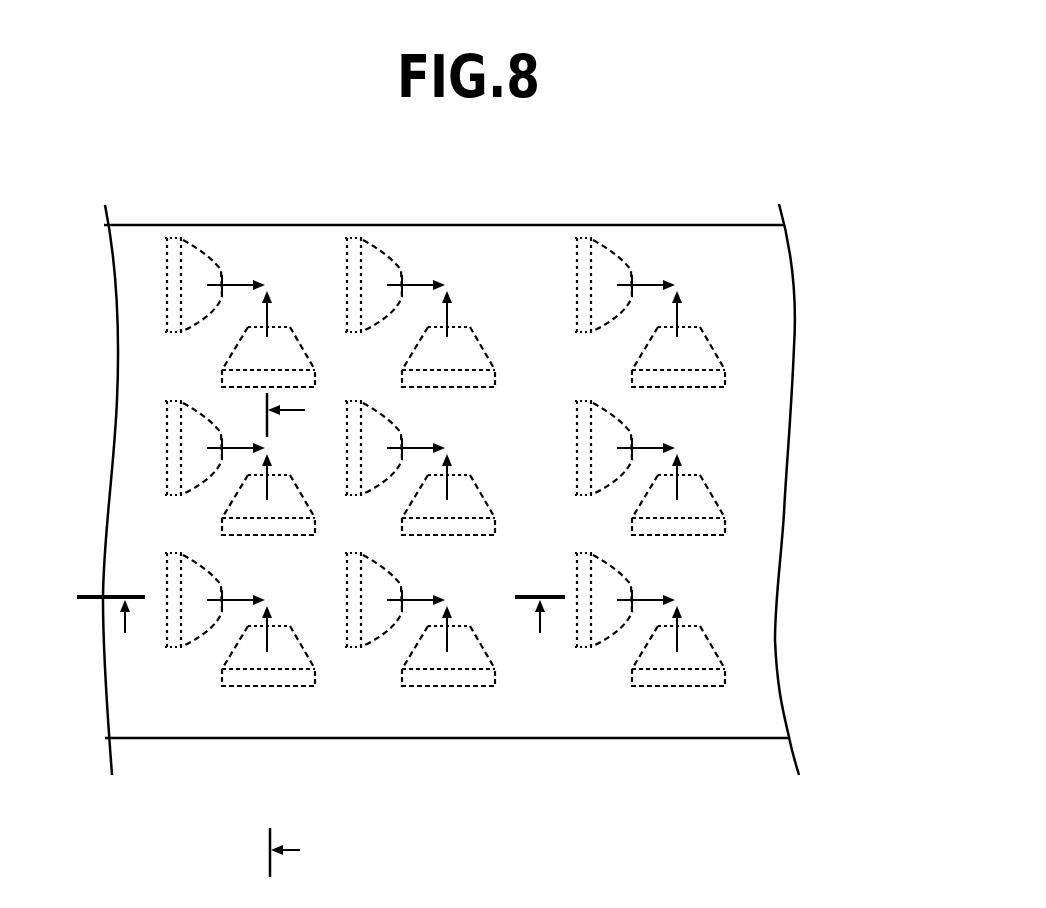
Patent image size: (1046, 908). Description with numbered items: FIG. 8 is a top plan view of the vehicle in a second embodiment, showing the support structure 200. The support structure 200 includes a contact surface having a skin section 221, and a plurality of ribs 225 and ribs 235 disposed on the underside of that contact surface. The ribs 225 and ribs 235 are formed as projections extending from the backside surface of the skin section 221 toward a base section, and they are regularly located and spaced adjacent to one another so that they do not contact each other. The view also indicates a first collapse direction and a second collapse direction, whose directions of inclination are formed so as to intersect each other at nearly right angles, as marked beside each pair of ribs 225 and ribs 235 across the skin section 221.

The support structure 200 is at (162, 174).
The skin section 221 is at (722, 225).
The ribs 225 is at (346, 477).
The ribs 235 is at (514, 566).